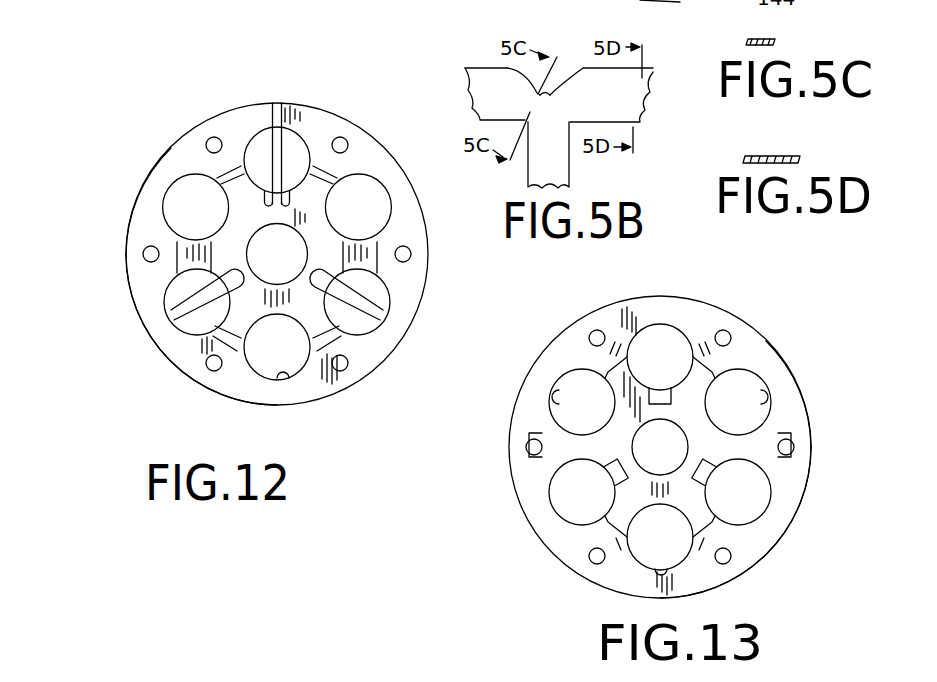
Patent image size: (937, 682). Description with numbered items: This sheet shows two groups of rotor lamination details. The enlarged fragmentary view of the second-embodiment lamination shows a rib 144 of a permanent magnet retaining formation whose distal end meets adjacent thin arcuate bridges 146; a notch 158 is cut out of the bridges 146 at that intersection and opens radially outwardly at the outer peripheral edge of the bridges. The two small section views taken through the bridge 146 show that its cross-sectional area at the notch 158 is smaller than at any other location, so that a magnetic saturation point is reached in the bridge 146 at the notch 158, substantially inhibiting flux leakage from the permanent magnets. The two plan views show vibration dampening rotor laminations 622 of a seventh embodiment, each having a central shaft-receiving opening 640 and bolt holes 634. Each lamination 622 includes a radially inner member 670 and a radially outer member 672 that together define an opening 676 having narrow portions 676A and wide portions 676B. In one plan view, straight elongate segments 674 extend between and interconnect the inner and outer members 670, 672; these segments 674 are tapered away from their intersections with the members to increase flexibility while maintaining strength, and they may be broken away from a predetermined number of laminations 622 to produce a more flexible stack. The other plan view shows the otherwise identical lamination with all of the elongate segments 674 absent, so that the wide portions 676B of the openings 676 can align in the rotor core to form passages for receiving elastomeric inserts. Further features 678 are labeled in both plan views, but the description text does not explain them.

In FIG. 5B, the rib 144 is at (568, 175).
In FIG. 5B, the bridge 146 is at (487, 77).
In FIG. 5C, the bridge 146 is at (778, 43).
In FIG. 5D, the bridge 146 is at (800, 158).
In FIG. 5B, the notch 158 is at (550, 95).
In FIG. 12, the vibration dampening rotor lamination 622 is at (249, 73).
In FIG. 13, the vibration dampening rotor lamination 622 is at (770, 325).
In FIG. 12, the bolt holes 634 is at (211, 140).
In FIG. 13, the bolt holes 634 is at (597, 338).
In FIG. 12, the central shaft-receiving opening 640 is at (256, 226).
In FIG. 13, the central shaft-receiving opening 640 is at (689, 446).
In FIG. 12, the radially inner member 670 is at (182, 249).
In FIG. 13, the radially inner member 670 is at (753, 431).
In FIG. 12, the radially outer member 672 is at (147, 219).
In FIG. 13, the radially outer member 672 is at (790, 393).
In FIG. 12, the elongate segments 674 is at (296, 130).
In FIG. 13, the elongate segments 674 is at (660, 446).
In FIG. 12, the opening 676 is at (219, 174).
In FIG. 13, the opening 676 is at (665, 348).
In FIG. 12, the narrow portions 676A is at (245, 160).
In FIG. 13, the narrow portions 676A is at (622, 358).
In FIG. 12, the wide portions 676B is at (260, 143).
In FIG. 13, the wide portions 676B is at (650, 330).
In FIG. 12, the spring arm 678 is at (340, 200).
In FIG. 13, the spring arm 678 is at (710, 410).